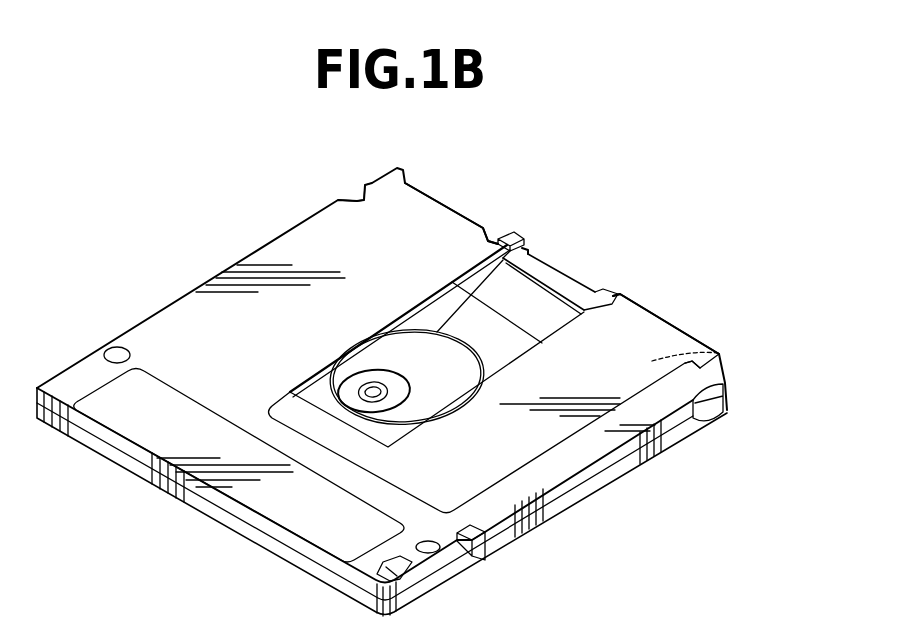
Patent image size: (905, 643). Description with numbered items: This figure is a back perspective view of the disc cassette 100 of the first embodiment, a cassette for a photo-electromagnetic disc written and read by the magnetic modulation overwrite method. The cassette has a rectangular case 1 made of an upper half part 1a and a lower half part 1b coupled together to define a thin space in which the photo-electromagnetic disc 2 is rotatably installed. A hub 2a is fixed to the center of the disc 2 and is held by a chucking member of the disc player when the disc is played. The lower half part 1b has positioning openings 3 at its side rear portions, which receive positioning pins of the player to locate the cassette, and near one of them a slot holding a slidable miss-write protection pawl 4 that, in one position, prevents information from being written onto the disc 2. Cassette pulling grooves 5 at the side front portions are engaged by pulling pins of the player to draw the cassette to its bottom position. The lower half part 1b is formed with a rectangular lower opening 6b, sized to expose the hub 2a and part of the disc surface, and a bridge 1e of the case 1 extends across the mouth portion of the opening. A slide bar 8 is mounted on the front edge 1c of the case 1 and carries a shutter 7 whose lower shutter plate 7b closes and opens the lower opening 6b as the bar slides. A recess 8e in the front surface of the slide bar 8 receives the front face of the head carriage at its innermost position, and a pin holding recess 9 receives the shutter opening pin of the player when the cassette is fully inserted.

The disc cassette 100 is at (675, 186).
The case 1 is at (694, 503).
The upper half part 1a is at (577, 493).
The lower half part 1b is at (607, 465).
The front edge 1c is at (450, 208).
The bridge 1e is at (612, 300).
The photo-electromagnetic disc 2 is at (523, 312).
The hub 2a is at (402, 395).
The positioning openings 3 is at (117, 352).
The miss-write protection pawl 4 is at (380, 573).
The cassette pulling grooves 5 is at (362, 190).
The lower opening 6b is at (448, 300).
The shutter 7 is at (680, 329).
The lower shutter plate 7b is at (728, 352).
The slide bar 8 is at (542, 266).
The recess 8e is at (589, 281).
The pin holding recess 9 is at (494, 231).